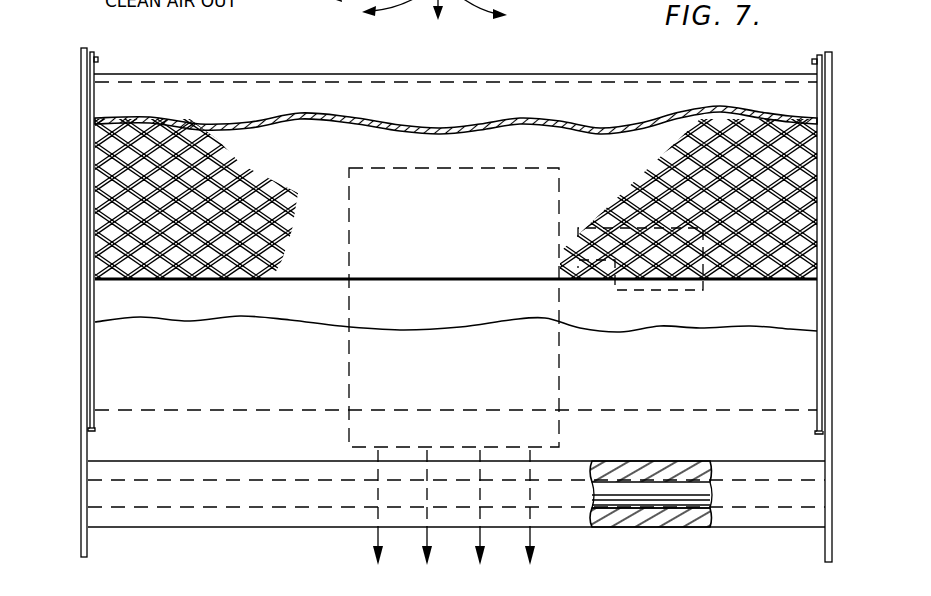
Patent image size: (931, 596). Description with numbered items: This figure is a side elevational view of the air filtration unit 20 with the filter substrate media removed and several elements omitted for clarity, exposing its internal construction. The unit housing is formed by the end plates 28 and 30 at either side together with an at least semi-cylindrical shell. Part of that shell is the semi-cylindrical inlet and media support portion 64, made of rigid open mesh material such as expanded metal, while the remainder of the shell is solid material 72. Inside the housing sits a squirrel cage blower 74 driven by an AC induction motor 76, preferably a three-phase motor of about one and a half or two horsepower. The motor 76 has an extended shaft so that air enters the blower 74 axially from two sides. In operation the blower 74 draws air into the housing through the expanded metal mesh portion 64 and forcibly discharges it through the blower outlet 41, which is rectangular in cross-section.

The air filtration unit 20 is at (852, 69).
The end plate 28 is at (832, 100).
The end plate 30 is at (88, 102).
The blower outlet 41 is at (359, 448).
The semi-cylindrical inlet and media support portion 64 is at (795, 196).
The solid material 72 is at (803, 385).
The squirrel cage blower 74 is at (482, 168).
The AC induction motor 76 is at (663, 291).